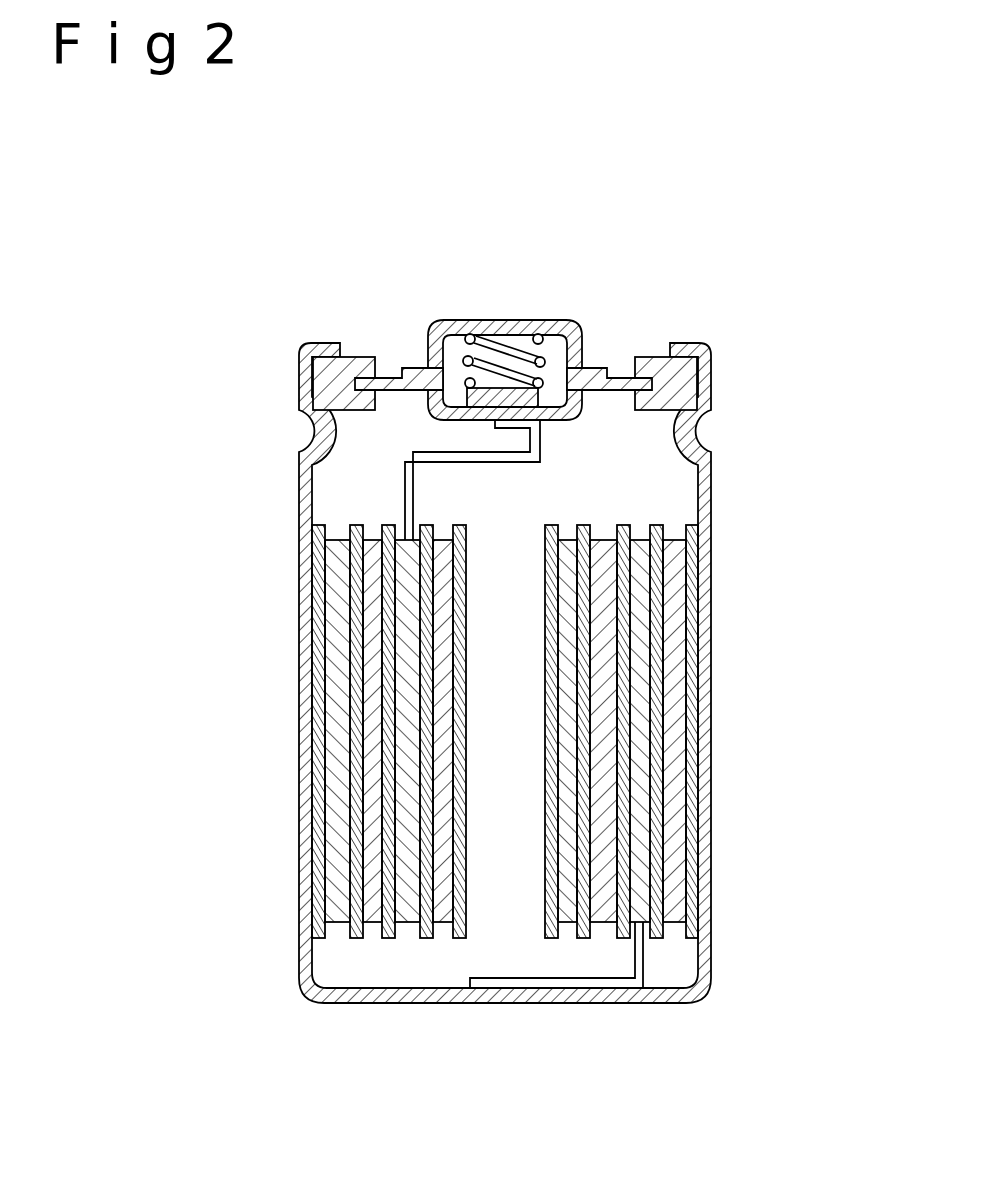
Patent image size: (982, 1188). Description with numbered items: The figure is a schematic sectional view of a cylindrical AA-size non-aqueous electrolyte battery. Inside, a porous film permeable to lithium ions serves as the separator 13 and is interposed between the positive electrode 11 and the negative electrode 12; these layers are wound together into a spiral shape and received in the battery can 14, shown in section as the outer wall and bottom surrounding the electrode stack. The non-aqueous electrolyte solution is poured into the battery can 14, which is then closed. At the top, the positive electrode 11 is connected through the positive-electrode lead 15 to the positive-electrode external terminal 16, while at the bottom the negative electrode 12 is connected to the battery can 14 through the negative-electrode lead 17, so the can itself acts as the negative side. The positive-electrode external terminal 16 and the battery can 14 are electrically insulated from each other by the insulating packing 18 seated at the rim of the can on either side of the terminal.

The positive electrode 11 is at (690, 660).
The negative electrode 12 is at (640, 825).
The separator 13 is at (663, 730).
The battery can 14 is at (712, 585).
The positive-electrode lead 15 is at (403, 498).
The positive-electrode external terminal 16 is at (598, 392).
The negative-electrode lead 17 is at (645, 970).
The insulating packing 18 is at (678, 267).